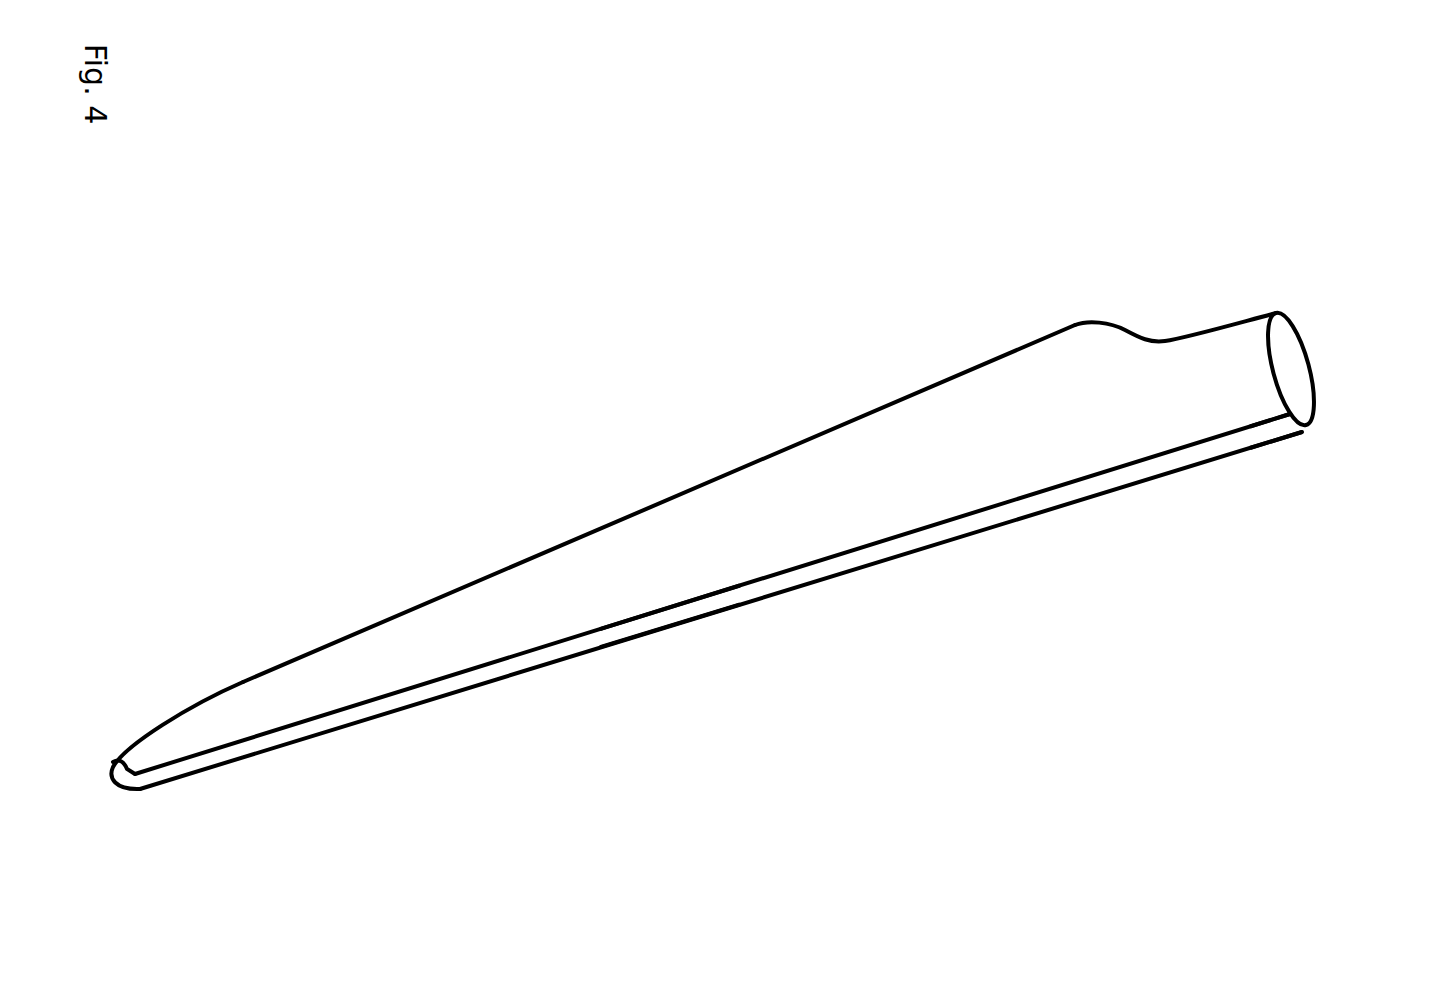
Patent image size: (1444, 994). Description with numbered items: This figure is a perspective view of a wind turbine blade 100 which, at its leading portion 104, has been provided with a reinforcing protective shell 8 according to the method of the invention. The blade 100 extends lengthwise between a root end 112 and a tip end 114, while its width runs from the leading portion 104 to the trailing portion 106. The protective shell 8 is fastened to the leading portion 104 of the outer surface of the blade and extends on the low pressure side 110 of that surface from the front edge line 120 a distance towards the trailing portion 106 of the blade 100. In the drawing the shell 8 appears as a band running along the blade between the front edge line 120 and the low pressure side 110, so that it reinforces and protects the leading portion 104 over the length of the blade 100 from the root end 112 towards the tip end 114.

The wind turbine blade 100 is at (582, 388).
The trailing portion 106 is at (408, 564).
The tip end 114 is at (112, 819).
The leading portion 104 is at (1076, 552).
The protective shell 8 is at (798, 577).
The low pressure side 110 is at (670, 583).
The root end 112 is at (1269, 272).
The front edge line 120 is at (1312, 423).